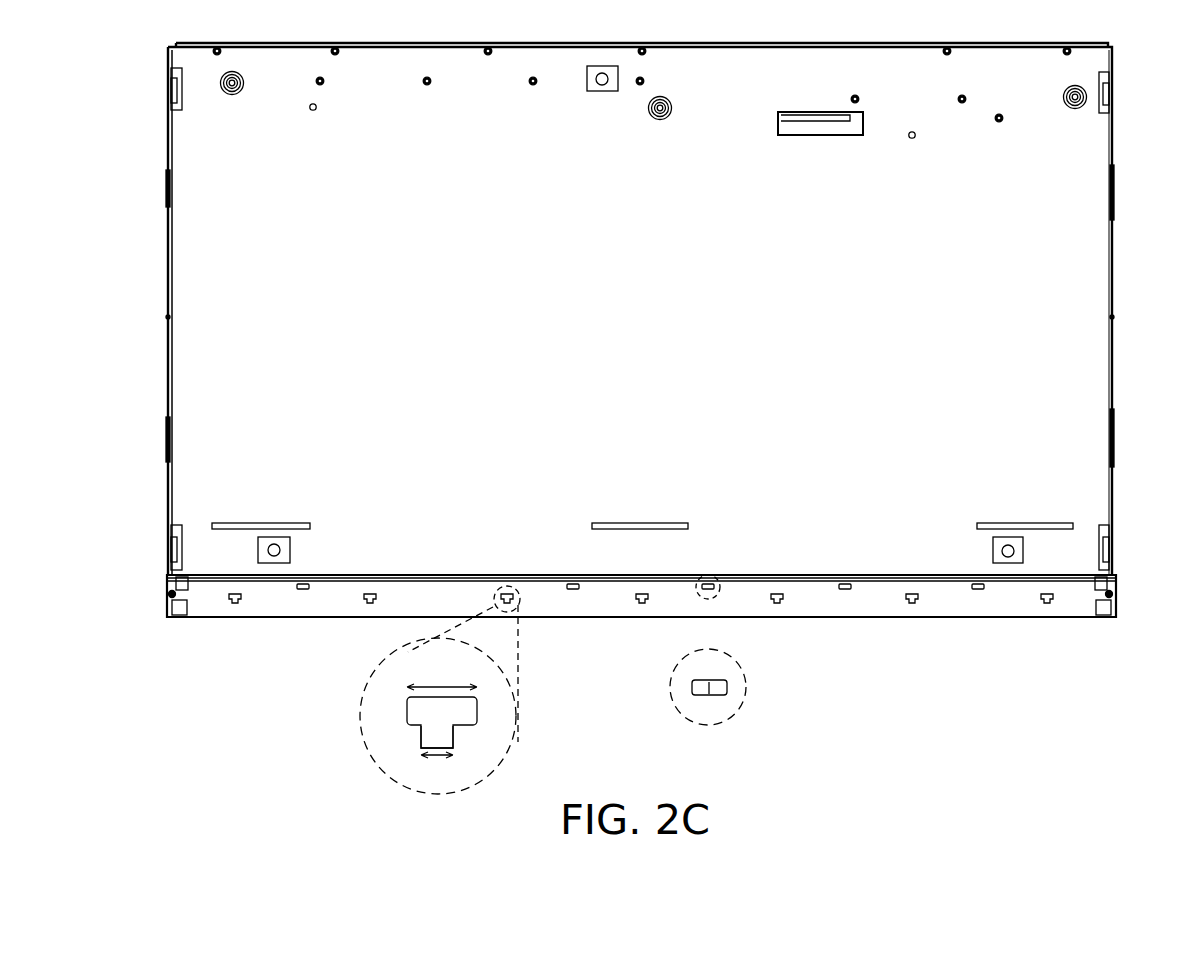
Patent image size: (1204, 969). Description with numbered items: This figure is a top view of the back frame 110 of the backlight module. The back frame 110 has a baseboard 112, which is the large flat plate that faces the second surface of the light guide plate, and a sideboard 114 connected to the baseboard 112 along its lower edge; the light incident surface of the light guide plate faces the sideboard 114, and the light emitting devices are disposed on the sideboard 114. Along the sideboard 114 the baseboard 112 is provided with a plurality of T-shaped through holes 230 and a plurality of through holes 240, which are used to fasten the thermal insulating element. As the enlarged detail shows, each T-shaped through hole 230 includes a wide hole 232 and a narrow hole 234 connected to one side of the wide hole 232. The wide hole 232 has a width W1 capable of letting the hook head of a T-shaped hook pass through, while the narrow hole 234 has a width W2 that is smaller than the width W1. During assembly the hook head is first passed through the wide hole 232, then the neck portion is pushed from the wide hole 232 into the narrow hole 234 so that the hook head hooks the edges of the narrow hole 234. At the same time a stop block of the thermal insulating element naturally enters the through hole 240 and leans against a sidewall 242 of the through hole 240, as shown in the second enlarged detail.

The back frame 110 is at (1105, 445).
The baseboard 112 is at (1105, 395).
The sideboard 114 is at (845, 620).
The T-shaped through hole 230 is at (370, 606).
The wide hole 232 is at (474, 715).
The narrow hole 234 is at (446, 740).
The through hole 240 is at (303, 592).
The sidewall 242 is at (709, 684).
The width of the wide hole W1 is at (442, 673).
The width of the narrow hole W2 is at (437, 772).